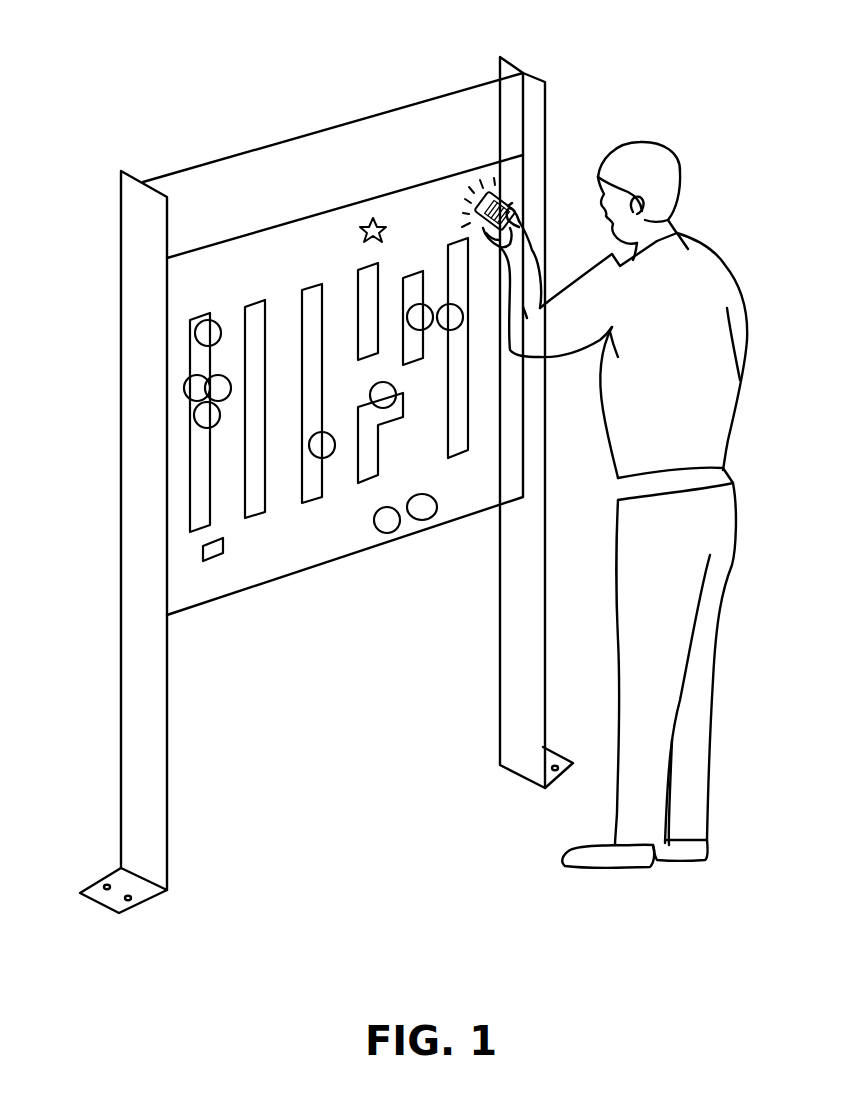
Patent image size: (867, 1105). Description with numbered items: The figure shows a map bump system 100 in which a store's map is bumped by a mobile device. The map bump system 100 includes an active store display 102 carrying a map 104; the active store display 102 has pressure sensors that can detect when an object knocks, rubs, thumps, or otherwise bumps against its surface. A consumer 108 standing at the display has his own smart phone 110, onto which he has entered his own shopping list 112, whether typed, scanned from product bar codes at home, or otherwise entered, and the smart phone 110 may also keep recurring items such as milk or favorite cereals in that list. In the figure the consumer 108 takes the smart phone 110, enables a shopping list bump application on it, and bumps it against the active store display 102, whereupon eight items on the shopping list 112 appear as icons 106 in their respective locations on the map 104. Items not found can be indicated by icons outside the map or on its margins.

The map bump system 100 is at (158, 48).
The active store display 102 is at (210, 158).
The map 104 is at (182, 522).
The icons 106 is at (194, 416).
The consumer 108 is at (672, 143).
The smart phone 110 is at (505, 195).
The shopping list 112 is at (503, 203).